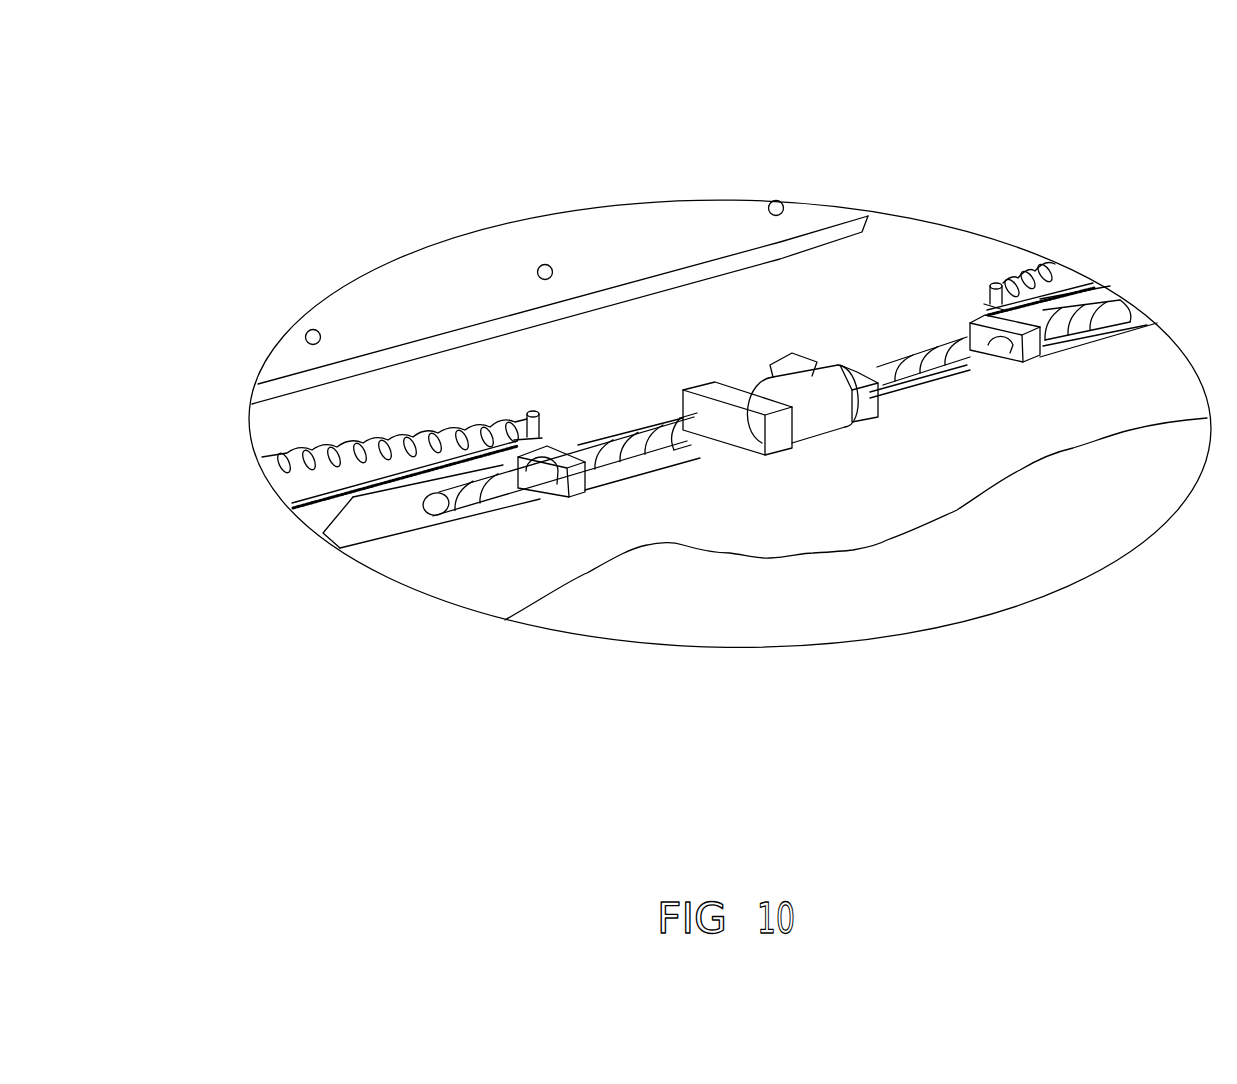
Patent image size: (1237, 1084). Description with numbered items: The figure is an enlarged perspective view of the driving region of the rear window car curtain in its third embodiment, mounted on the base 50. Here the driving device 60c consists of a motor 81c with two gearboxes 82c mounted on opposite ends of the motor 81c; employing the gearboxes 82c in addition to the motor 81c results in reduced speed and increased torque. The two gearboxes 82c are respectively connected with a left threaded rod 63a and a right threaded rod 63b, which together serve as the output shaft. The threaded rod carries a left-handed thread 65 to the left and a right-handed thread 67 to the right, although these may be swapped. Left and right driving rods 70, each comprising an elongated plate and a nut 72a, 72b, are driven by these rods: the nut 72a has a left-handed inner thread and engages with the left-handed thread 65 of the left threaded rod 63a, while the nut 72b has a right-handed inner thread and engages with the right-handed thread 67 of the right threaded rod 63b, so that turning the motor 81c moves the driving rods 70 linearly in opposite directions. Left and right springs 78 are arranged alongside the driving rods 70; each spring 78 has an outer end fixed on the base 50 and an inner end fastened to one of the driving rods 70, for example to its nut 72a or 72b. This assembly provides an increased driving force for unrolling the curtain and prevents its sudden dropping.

The base 50 is at (970, 267).
The driving device 60c is at (863, 332).
The left threaded rod 63a is at (673, 438).
The right threaded rod 63b is at (888, 380).
The left-handed thread 65 is at (490, 492).
The right-handed thread 67 is at (1094, 332).
The driving rod 70 is at (292, 548).
The nut 72a is at (565, 497).
The nut 72b is at (1040, 362).
The spring 78 is at (437, 447).
The motor 81c is at (807, 400).
The gearbox 82c is at (790, 357).